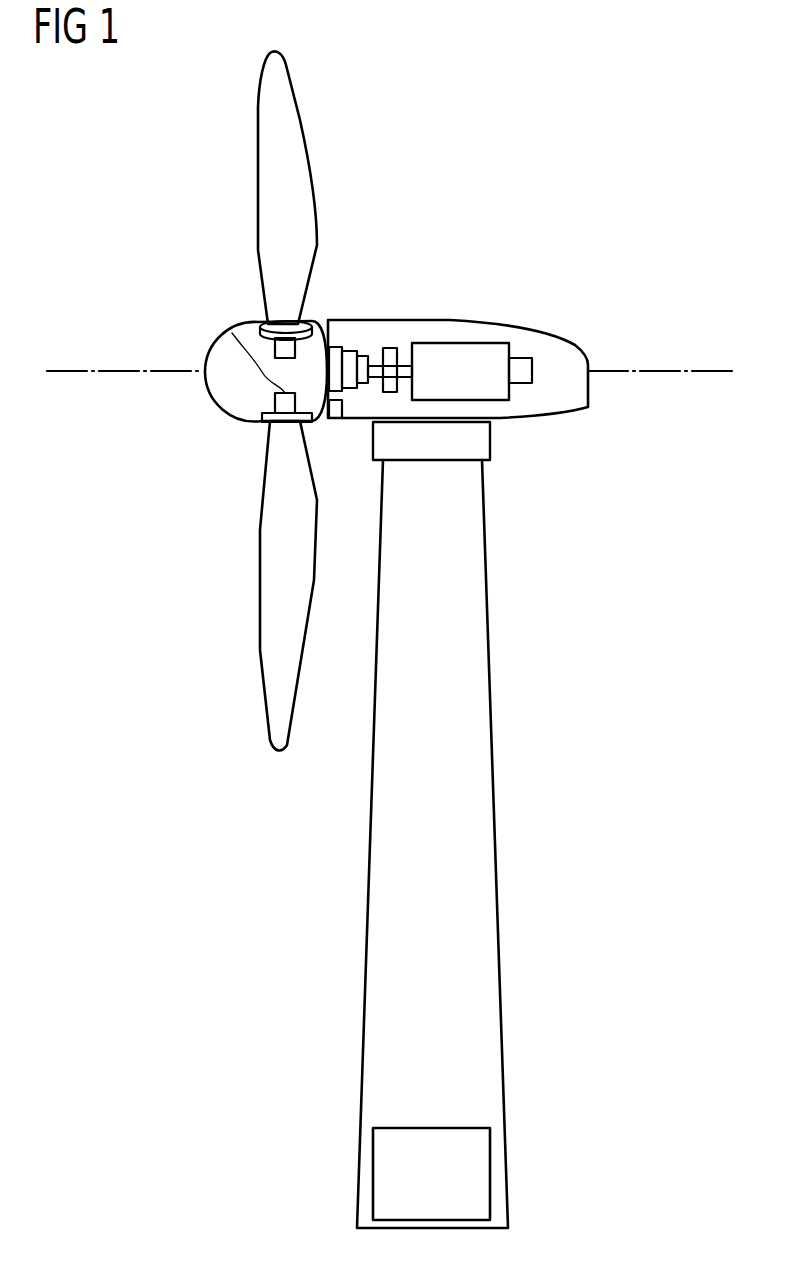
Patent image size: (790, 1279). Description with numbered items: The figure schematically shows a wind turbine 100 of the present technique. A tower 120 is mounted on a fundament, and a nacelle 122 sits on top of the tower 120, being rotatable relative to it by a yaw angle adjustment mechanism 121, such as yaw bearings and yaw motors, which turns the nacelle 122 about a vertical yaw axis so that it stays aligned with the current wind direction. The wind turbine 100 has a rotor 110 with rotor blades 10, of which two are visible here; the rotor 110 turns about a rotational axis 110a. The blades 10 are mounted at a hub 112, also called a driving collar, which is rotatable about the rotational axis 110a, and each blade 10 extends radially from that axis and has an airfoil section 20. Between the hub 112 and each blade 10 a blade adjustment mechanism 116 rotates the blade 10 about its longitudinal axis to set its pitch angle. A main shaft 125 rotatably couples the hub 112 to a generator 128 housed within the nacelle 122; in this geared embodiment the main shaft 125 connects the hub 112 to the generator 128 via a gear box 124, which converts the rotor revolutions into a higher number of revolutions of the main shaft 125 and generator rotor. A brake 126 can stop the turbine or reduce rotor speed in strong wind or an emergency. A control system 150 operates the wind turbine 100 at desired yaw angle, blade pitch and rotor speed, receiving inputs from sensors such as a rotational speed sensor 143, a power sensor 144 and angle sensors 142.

The rotor blade 10 is at (290, 80).
The airfoil section 20 is at (322, 198).
The wind turbine 100 is at (625, 217).
The rotor 110 is at (166, 287).
The rotational axis 110a is at (70, 370).
The hub 112 is at (206, 380).
The blade adjustment mechanism 116 is at (262, 332).
The tower 120 is at (477, 573).
The yaw angle adjustment mechanism 121 is at (492, 440).
The nacelle 122 is at (567, 340).
The gear box 124 is at (347, 355).
The main shaft 125 is at (374, 373).
The brake 126 is at (391, 352).
The generator 128 is at (461, 343).
The angle sensors 142 is at (280, 362).
The rotational speed sensor 143 is at (337, 418).
The power sensor 144 is at (532, 370).
The control system 150 is at (428, 1128).